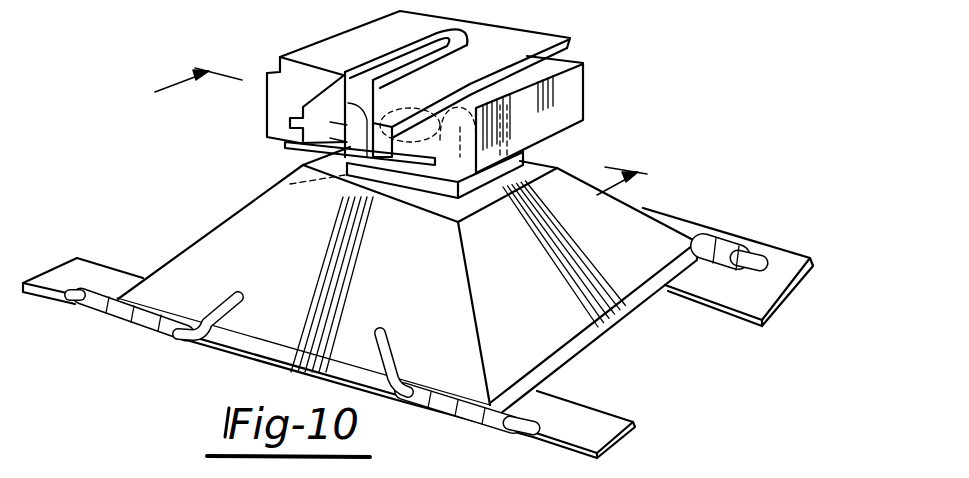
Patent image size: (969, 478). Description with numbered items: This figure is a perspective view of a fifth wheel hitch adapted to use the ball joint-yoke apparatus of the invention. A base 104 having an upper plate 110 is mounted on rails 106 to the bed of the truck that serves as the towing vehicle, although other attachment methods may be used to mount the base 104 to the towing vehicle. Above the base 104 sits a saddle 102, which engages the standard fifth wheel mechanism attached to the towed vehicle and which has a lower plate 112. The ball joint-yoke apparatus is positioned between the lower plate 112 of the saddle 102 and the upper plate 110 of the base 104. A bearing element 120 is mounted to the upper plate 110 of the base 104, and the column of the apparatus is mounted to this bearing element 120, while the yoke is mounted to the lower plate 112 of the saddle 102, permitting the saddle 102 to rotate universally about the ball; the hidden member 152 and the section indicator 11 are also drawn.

The saddle 102 is at (546, 31).
The base 104 is at (613, 285).
The rails 106 is at (740, 297).
The upper plate 110 is at (403, 195).
The lower plate 112 is at (495, 172).
The bearing element 120 is at (585, 108).
The hidden member 152 is at (290, 184).
The section line 11- 11 is at (132, 90).